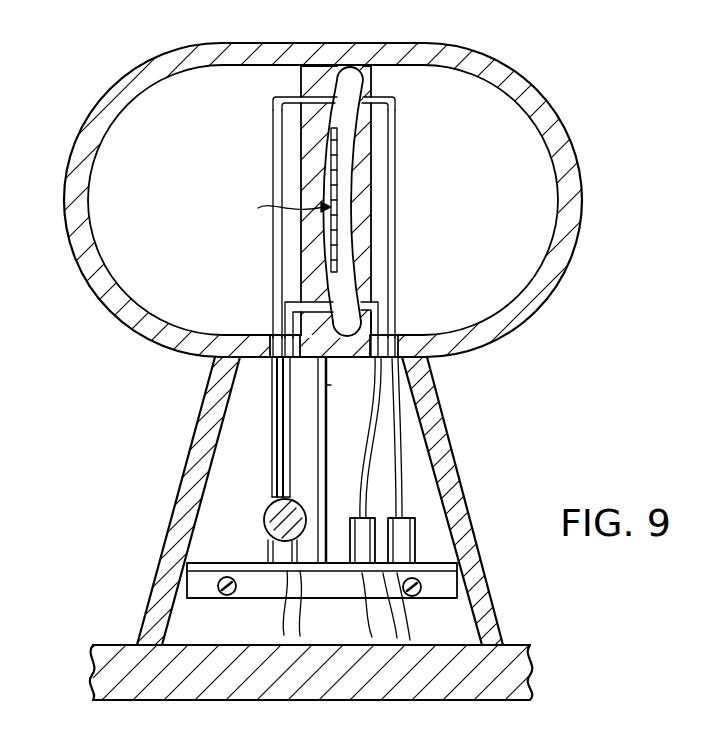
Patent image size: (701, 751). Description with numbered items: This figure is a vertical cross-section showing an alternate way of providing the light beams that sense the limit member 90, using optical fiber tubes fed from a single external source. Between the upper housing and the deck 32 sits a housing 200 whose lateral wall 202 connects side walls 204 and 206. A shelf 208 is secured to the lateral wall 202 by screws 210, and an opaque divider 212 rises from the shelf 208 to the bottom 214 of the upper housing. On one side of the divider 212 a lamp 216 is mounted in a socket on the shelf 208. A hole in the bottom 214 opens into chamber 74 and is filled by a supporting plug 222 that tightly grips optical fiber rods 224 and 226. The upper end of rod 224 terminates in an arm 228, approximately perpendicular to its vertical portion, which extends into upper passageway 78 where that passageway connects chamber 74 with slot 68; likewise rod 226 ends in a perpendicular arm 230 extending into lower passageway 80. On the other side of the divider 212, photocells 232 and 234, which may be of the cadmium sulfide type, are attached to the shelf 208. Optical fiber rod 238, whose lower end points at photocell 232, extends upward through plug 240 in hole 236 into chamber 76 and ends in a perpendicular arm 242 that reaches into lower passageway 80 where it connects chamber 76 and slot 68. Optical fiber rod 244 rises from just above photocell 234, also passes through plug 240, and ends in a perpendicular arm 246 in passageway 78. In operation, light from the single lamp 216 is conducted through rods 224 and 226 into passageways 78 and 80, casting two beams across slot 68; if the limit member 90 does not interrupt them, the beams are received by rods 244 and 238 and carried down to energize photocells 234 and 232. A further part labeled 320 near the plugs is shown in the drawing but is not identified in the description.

The deck 32 is at (520, 646).
The slot 68 is at (350, 78).
The chamber 74 is at (135, 205).
The chamber 76 is at (525, 270).
The upper passageway 78 is at (338, 188).
The lower passageway 80 is at (342, 307).
The limit member 90 is at (280, 208).
The housing 200 is at (190, 458).
The lateral wall 202 is at (207, 512).
The side wall 204 is at (150, 600).
The side wall 206 is at (443, 420).
The shelf 208 is at (233, 600).
The screws 210 is at (229, 596).
The opaque divider 212 is at (327, 382).
The bottom 214 is at (243, 345).
The lamp 216 is at (265, 524).
The supporting plug 222 is at (273, 336).
The optical fiber rod 224 is at (277, 456).
The optical fiber rod 226 is at (288, 480).
The arm 228 is at (273, 97).
The perpendicular arm 230 is at (280, 278).
The photocell 232 is at (345, 517).
The photocell 234 is at (410, 520).
The hole 236 is at (400, 345).
The optical fiber rod 238 is at (377, 430).
The plug 240 is at (396, 322).
The perpendicular arm 242 is at (395, 297).
The optical fiber rod 244 is at (400, 218).
The perpendicular arm 246 is at (395, 97).
The feedthrough 320 is at (271, 358).